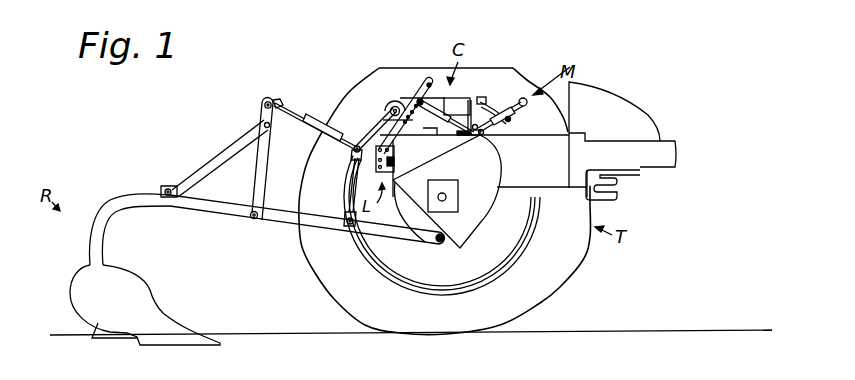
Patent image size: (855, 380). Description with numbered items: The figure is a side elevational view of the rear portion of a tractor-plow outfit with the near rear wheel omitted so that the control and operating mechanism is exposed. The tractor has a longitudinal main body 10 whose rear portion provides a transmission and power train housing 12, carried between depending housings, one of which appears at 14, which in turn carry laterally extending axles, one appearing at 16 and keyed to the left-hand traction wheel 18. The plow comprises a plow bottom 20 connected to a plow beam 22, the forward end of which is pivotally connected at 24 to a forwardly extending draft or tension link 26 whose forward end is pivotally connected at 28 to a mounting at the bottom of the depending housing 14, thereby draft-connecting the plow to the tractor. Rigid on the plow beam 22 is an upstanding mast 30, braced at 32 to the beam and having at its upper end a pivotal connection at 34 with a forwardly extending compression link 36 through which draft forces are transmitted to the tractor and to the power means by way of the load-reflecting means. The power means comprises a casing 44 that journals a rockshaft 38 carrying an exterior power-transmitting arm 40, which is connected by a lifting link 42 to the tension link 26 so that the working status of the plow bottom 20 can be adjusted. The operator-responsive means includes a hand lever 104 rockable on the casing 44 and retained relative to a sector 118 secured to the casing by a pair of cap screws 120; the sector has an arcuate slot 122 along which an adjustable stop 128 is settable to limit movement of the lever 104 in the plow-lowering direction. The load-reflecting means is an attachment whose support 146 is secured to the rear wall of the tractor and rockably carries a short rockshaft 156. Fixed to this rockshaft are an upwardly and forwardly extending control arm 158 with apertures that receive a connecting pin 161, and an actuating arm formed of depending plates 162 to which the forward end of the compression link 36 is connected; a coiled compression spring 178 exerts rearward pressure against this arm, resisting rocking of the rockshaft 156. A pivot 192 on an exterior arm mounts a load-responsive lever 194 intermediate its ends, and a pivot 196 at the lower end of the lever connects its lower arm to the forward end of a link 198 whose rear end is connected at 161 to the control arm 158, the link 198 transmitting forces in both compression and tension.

The longitudinal main body 10 is at (660, 168).
The transmission and power train housing 12 is at (507, 183).
The depending housing 14 is at (470, 230).
The axle 16 is at (446, 196).
The left-hand traction wheel 18 is at (553, 278).
The plow bottom 20 is at (158, 318).
The plow beam 22 is at (100, 230).
The pivotal connection 24 is at (254, 220).
The draft or tension link 26 is at (302, 226).
The pivotal connection 28 is at (438, 243).
The mast 30 is at (262, 180).
The brace 32 is at (217, 157).
The pivotal connection 34 is at (266, 100).
The compression link 36 is at (297, 108).
The rockshaft 38 is at (410, 73).
The power-transmitting arm 40 is at (375, 118).
The lifting link 42 is at (348, 178).
The casing 44 is at (465, 87).
The hand lever 104 is at (522, 108).
The sector 118 is at (490, 97).
The cap screws 120 is at (458, 107).
The arcuate slot 122 is at (487, 97).
The adjustable stop 128 is at (513, 122).
The support 146 is at (396, 163).
The load-reflecting rockshaft 156 is at (392, 153).
The control arm 158 is at (445, 78).
The connecting pin 161 is at (401, 102).
The depending plates 162 is at (378, 171).
The coiled compression spring 178 is at (393, 190).
The pivot 192 is at (483, 138).
The load-responsive lever 194 is at (493, 130).
The pivot 196 is at (476, 137).
The link 198 is at (450, 123).